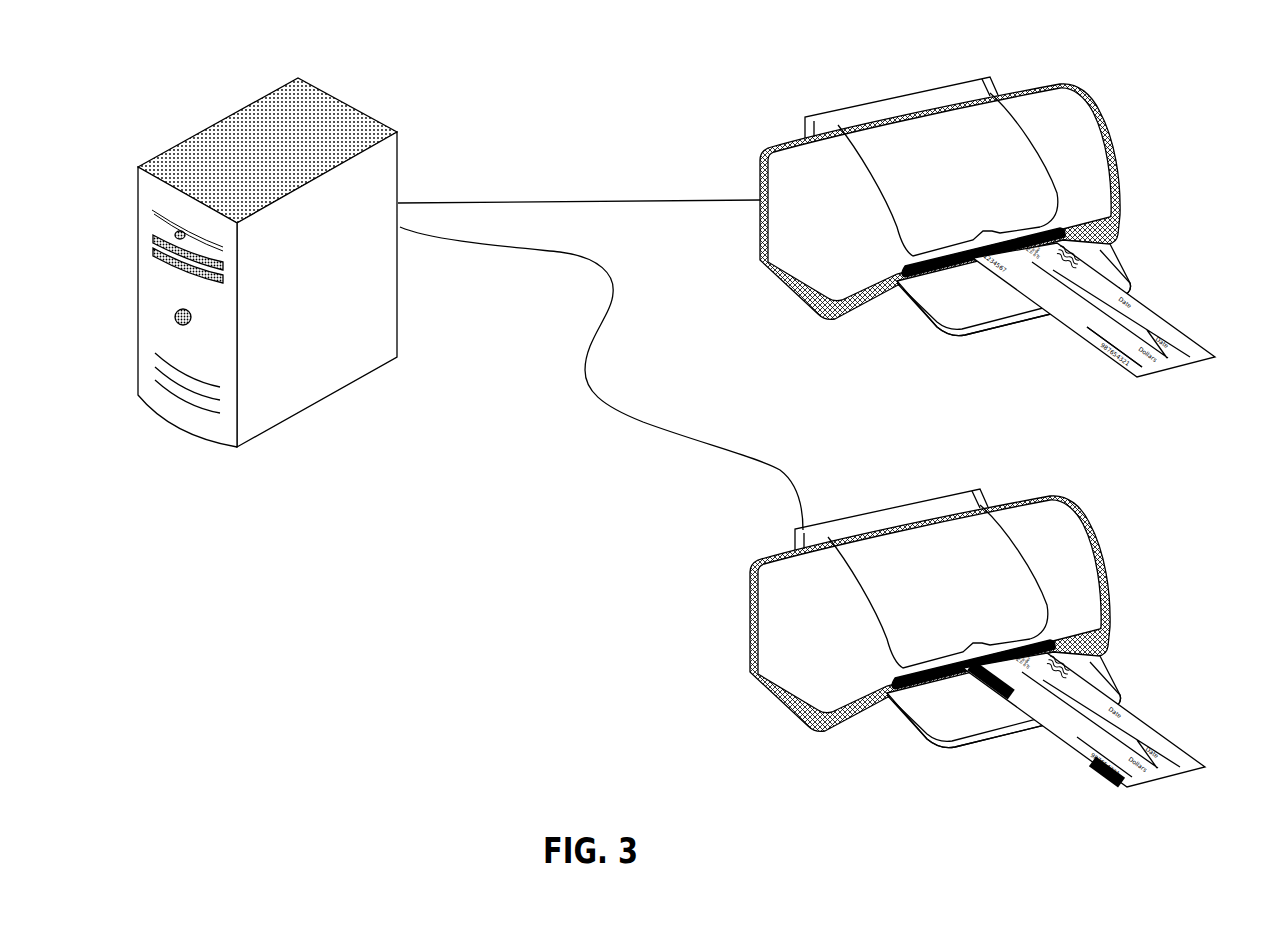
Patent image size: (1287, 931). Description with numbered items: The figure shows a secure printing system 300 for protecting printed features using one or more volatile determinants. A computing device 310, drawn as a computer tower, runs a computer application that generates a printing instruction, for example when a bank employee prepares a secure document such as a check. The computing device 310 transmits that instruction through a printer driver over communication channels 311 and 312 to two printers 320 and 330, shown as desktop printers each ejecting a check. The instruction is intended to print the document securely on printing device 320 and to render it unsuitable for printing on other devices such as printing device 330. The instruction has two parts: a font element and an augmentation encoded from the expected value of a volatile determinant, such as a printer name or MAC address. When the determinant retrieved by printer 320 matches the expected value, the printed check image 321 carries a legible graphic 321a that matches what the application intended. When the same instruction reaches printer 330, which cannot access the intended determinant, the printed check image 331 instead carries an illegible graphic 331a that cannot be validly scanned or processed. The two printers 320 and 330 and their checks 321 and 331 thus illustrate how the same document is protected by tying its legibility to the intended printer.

The secure printing system 300 is at (1002, 28).
The computing device 310 is at (317, 85).
The communication channel 311 is at (633, 201).
The communication channel 312 is at (592, 393).
The printer 320 is at (1087, 100).
The printed check image 321 is at (1168, 318).
The legible graphic 321a is at (1108, 364).
The printer 330 is at (1077, 512).
The printed check image 331 is at (1132, 710).
The illegible graphic 331a is at (1095, 771).